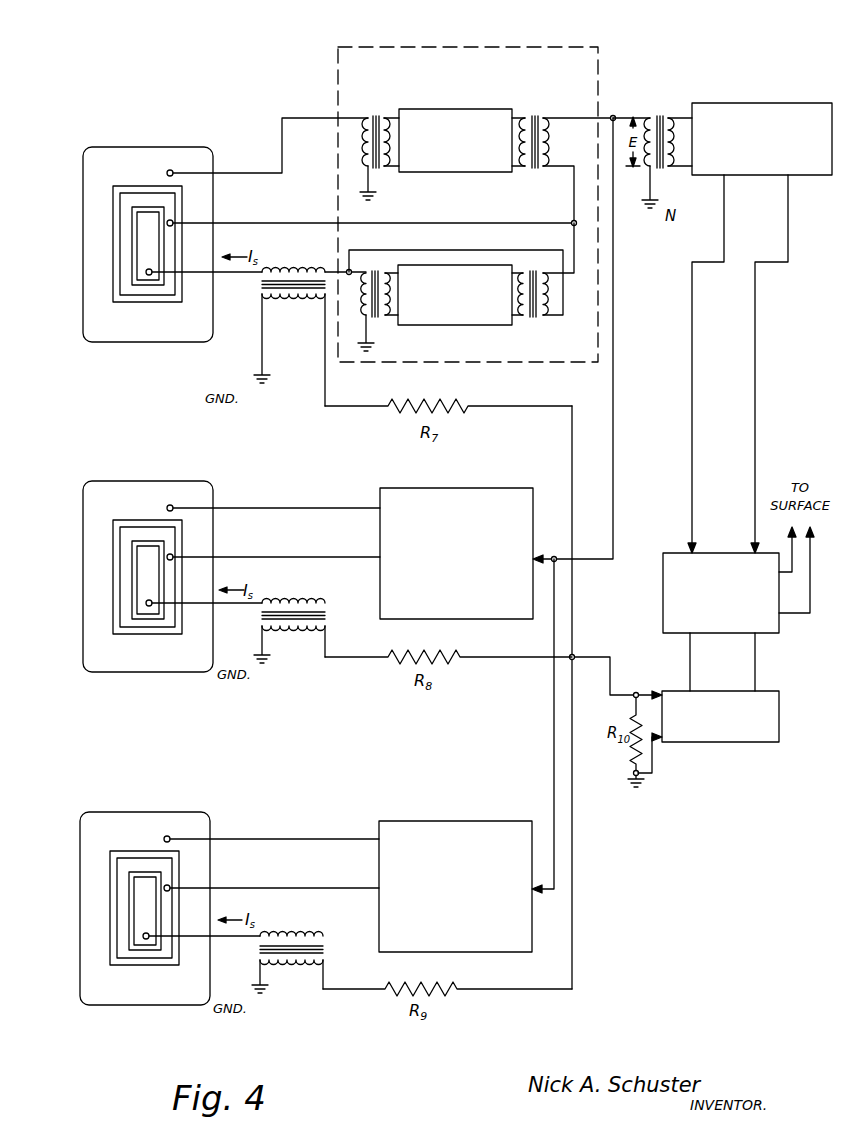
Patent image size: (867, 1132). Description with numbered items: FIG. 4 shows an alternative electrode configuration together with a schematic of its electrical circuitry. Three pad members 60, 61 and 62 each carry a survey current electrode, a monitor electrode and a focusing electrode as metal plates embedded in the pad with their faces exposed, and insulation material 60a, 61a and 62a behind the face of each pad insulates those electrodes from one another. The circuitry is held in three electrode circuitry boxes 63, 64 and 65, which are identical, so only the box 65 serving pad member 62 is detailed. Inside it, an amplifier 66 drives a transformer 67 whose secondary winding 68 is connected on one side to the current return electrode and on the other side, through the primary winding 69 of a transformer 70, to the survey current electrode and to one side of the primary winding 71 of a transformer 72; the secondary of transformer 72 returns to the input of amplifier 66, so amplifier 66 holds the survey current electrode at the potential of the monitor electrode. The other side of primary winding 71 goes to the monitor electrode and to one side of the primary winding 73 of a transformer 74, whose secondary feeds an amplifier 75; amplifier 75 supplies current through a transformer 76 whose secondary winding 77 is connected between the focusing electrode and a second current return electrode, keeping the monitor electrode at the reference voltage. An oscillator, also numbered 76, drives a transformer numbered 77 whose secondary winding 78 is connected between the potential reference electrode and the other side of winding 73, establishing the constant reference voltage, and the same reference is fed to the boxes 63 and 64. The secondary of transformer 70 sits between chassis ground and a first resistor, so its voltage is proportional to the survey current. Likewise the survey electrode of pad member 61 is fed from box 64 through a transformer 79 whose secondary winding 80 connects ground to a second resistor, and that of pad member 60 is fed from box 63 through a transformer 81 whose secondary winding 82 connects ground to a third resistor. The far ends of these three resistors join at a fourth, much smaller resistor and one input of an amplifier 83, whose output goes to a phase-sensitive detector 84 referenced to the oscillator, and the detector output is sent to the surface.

The pad member 60 is at (111, 908).
The insulation material 60a is at (112, 892).
The pad member 61 is at (114, 576).
The insulation material 61a is at (135, 565).
The pad member 62 is at (114, 244).
The insulation material 62a is at (135, 233).
The electrode circuitry box 63 is at (457, 820).
The electrode circuitry box 64 is at (466, 487).
The electrode circuitry box 65 is at (511, 45).
The amplifier 66 is at (461, 326).
The transformer 67 is at (379, 286).
The secondary winding 68 is at (361, 297).
The primary winding 69 is at (297, 268).
The transformer 70 is at (275, 275).
The primary winding 71 is at (551, 302).
The transformer 72 is at (537, 270).
The primary winding 73 is at (553, 141).
The transformer 74 is at (546, 190).
The amplifier 75 is at (463, 173).
The transformer / oscillator 76 is at (377, 170).
The secondary winding / transformer 77 is at (364, 150).
The secondary winding 78 is at (646, 120).
The transformer 79 is at (277, 648).
The secondary winding 80 is at (290, 640).
The transformer 81 is at (272, 978).
The secondary winding 82 is at (290, 966).
The amplifier 83 is at (726, 743).
The phase-sensitive detector 84 is at (668, 553).